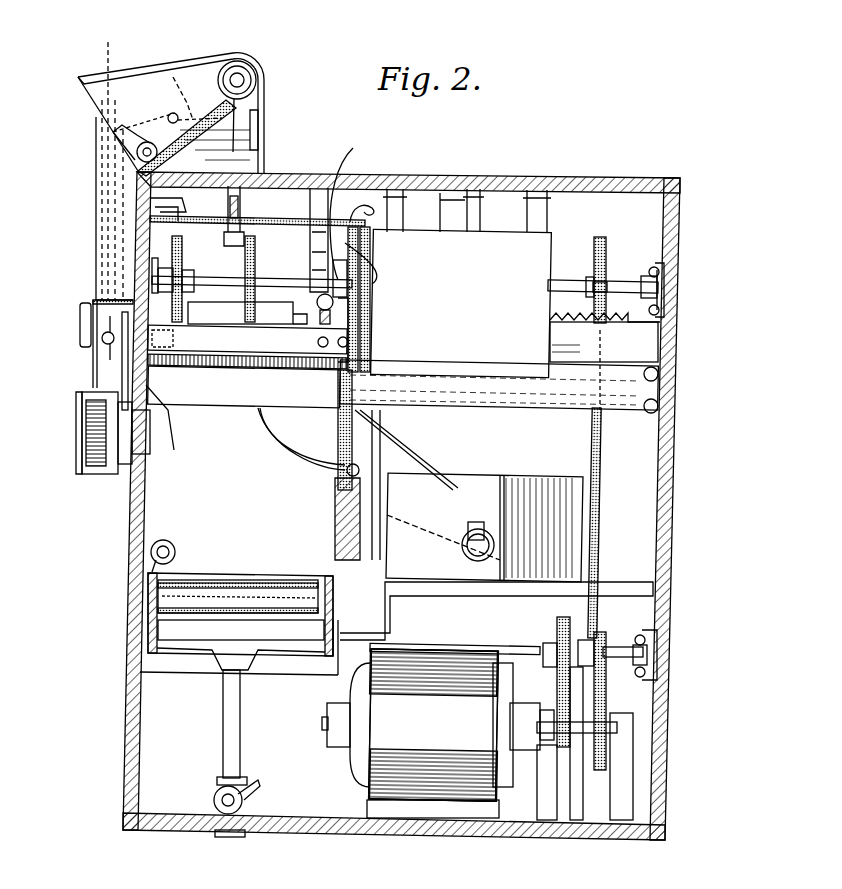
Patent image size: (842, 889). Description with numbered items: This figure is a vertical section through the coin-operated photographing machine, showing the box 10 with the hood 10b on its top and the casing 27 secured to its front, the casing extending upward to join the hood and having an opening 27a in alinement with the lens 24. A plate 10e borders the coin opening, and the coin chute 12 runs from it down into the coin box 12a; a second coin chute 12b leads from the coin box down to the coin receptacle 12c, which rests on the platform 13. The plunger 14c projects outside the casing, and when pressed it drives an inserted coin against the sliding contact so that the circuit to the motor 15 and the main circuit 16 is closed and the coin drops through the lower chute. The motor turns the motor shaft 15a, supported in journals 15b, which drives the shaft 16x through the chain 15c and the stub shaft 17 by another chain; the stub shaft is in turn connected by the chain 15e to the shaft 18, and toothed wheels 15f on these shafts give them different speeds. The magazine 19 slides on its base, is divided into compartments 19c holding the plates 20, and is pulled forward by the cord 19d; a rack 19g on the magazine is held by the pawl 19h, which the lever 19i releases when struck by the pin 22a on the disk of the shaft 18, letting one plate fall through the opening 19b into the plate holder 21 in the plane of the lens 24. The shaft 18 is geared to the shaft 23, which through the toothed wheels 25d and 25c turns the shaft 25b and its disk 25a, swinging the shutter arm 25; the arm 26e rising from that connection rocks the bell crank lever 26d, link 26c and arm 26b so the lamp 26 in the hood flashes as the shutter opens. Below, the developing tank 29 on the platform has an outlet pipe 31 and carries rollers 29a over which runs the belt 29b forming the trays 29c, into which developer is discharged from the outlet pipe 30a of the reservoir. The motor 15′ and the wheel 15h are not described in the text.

The box 10 is at (678, 310).
The hood 10b is at (180, 62).
The plate 10e is at (97, 189).
The coin chute 12 is at (208, 262).
The coin box 12a is at (285, 310).
The coin chute 12b is at (296, 448).
The coin receptacle 12c is at (472, 480).
The platform 13 is at (108, 62).
The plunger 14c is at (80, 330).
The motor 15 is at (417, 733).
The motor 15′ is at (434, 725).
The motor shaft 15a is at (556, 703).
The journals 15b is at (628, 792).
The chain 15c is at (607, 678).
The chain 15e is at (592, 460).
The toothed wheels 15f is at (606, 252).
The sprocket 15h is at (598, 640).
The main circuit 16 is at (652, 632).
The shaft 16x is at (443, 645).
The stub shaft 17 is at (540, 660).
The shaft 18 is at (570, 280).
The magazine 19 is at (428, 238).
The opening 19b is at (338, 378).
The compartments 19c is at (196, 214).
The cord 19d is at (288, 222).
The rack 19g is at (605, 351).
The pawl 19h is at (372, 318).
The lever 19i is at (372, 280).
The plates 20 is at (375, 268).
The plate holder 21 is at (340, 440).
The pin 22a is at (356, 206).
The shaft 23 is at (276, 282).
The lens 24 is at (150, 440).
The shutter arm 25 is at (140, 430).
The disk 25a is at (108, 332).
The shaft 25b is at (160, 400).
The toothed wheel 25c is at (205, 366).
The toothed wheel 25d is at (185, 336).
The lamp 26 is at (206, 144).
The arm 26b is at (268, 118).
The link 26c is at (176, 68).
The bell crank lever 26d is at (150, 140).
The lever or arm 26e is at (93, 300).
The casing 27 is at (76, 396).
The opening 27a is at (100, 425).
The developing tank 29 is at (180, 655).
The rollers 29a is at (250, 605).
The belt 29b is at (216, 585).
The trays 29c is at (290, 576).
The outlet pipe 30a is at (172, 544).
The outlet pipe 31 is at (224, 730).